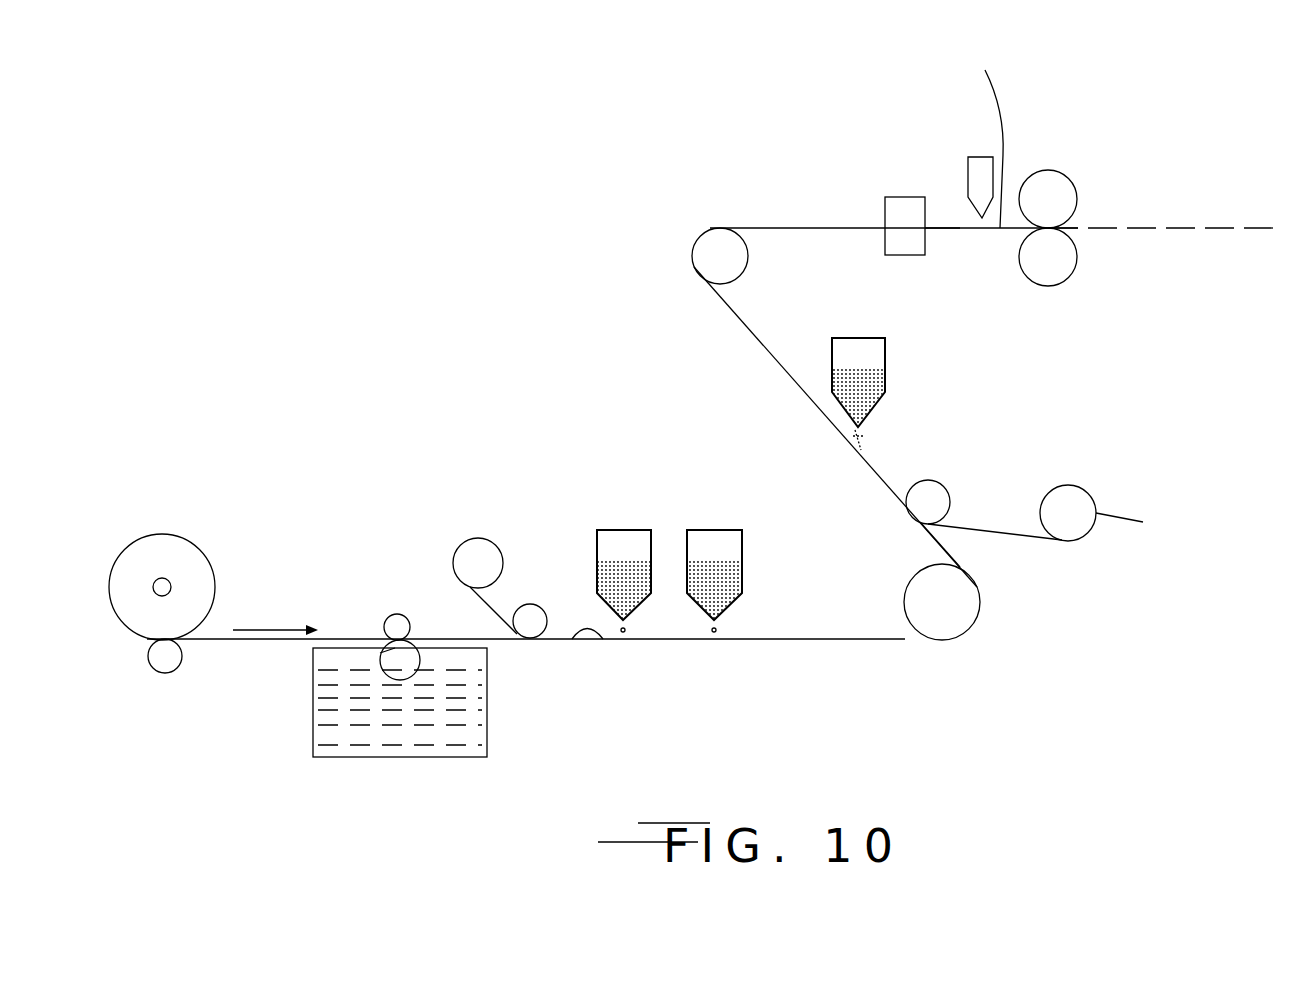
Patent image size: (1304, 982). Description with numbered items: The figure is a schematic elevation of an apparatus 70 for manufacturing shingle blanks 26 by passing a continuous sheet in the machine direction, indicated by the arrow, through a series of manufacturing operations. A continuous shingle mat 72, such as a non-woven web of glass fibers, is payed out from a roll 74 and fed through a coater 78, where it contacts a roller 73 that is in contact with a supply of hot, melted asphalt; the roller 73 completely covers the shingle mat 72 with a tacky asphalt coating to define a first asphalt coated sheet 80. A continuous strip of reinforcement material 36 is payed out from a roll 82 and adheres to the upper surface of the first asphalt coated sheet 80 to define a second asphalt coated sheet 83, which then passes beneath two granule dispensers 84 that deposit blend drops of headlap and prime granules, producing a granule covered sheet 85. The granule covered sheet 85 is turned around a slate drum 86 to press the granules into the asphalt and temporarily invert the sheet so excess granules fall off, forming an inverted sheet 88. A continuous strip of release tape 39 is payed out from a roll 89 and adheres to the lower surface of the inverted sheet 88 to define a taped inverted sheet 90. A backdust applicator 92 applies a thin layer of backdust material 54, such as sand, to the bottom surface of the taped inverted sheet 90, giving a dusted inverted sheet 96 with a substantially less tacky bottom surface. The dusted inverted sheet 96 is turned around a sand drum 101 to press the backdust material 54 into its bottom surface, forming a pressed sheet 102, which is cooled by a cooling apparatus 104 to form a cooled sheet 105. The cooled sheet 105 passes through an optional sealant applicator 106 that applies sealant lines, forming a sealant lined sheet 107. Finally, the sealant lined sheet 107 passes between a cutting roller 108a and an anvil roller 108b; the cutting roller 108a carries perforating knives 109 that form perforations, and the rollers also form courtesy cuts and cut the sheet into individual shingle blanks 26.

The shingle blank 26 is at (1181, 278).
The reinforcement material 36 is at (505, 590).
The release tape 39 is at (982, 527).
The backdust material 54 is at (863, 438).
The apparatus 70 is at (376, 506).
The shingle mat 72 is at (228, 642).
The roller 73 is at (381, 653).
The roll 74 is at (186, 540).
The coater 78 is at (312, 700).
The first asphalt coated sheet 80 is at (451, 637).
The roll 82 is at (474, 538).
The second asphalt coated sheet 83 is at (603, 639).
The granule dispensers 84 is at (590, 555).
The granule covered sheet 85 is at (735, 640).
The slate drum 86 is at (977, 612).
The inverted sheet 88 is at (930, 542).
The roll 89 is at (1111, 513).
The taped inverted sheet 90 is at (877, 480).
The backdust applicator 92 is at (887, 358).
The dusted inverted sheet 96 is at (760, 348).
The sand drum 101 is at (714, 232).
The pressed sheet 102 is at (795, 227).
The cooling apparatus 104 is at (903, 197).
The cooled sheet 105 is at (957, 232).
The sealant applicator 106 is at (965, 167).
The sealant lined sheet 107 is at (983, 131).
The cutting roller 108a is at (1023, 282).
The anvil roller 108b is at (1057, 170).
The perforating knives 109 is at (1065, 232).